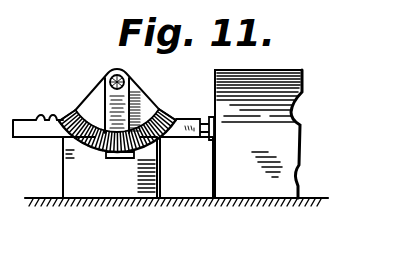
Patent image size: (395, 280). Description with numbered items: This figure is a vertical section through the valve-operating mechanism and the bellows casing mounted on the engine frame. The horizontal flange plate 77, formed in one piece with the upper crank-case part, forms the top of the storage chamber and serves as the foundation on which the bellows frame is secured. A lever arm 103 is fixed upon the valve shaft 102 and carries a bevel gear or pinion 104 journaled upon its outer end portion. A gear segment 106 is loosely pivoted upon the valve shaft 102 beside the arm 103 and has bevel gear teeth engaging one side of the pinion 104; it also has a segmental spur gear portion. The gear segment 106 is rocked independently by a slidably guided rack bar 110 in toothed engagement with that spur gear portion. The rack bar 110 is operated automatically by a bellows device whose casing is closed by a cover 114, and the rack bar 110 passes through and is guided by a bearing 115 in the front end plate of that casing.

The flange plate 77 is at (213, 198).
The valve shaft 102 is at (127, 79).
The lever arm 103 is at (110, 98).
The bevel gear or pinion 104 is at (108, 158).
The gear segment 106 is at (80, 147).
The rack bar 110 is at (31, 130).
The cover 114 is at (262, 84).
The bearing 115 is at (212, 143).